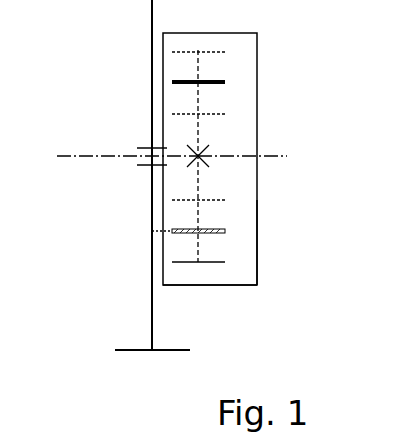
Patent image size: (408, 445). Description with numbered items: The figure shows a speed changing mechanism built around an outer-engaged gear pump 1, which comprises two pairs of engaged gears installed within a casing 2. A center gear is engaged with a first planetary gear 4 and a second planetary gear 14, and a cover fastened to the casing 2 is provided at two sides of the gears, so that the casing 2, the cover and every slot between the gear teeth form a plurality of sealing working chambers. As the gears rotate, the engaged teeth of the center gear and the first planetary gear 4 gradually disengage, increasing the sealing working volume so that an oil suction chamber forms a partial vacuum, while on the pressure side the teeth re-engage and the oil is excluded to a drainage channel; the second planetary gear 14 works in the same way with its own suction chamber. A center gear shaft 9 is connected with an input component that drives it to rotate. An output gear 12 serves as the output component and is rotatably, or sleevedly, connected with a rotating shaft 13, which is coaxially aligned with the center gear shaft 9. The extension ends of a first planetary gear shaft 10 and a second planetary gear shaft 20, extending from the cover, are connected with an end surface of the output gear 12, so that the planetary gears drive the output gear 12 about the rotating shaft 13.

The outer-engaged gear pump 1 is at (254, 49).
The casing 2 is at (257, 272).
The first planetary gear 4 is at (210, 99).
The center gear shaft 9 is at (284, 146).
The first planetary gear shaft 10 is at (155, 76).
The output gear 12 is at (142, 4).
The rotating shaft 13 is at (82, 166).
The second planetary gear 14 is at (210, 243).
The second planetary gear shaft 20 is at (155, 239).